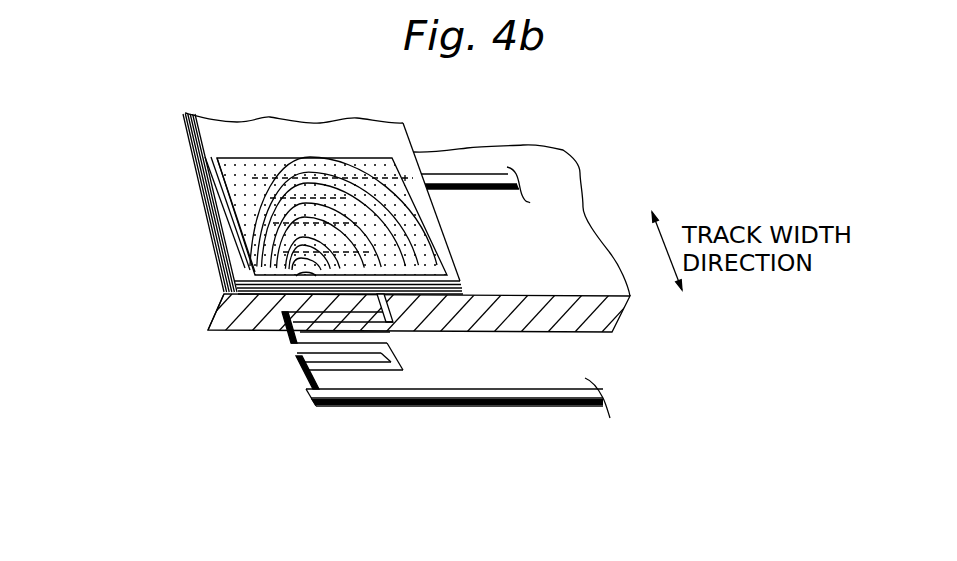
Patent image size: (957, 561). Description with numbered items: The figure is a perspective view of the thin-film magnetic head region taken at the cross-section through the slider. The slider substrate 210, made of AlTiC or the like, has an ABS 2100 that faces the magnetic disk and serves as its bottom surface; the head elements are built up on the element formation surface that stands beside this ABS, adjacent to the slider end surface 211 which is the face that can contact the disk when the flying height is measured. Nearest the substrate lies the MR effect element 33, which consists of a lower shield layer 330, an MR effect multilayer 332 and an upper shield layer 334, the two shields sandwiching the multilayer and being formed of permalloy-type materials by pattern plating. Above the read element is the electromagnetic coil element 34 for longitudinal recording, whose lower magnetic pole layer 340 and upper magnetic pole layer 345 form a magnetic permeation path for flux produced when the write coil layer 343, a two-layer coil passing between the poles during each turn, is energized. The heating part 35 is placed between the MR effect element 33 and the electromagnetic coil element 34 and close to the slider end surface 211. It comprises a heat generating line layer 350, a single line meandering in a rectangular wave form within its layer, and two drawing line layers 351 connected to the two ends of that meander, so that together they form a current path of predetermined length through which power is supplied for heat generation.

The slider end surface 211 is at (193, 160).
The electromagnetic coil element 34 is at (112, 170).
The write coil layer 343 is at (210, 197).
The upper magnetic pole layer 345 is at (218, 225).
The lower magnetic pole layer 340 is at (230, 260).
The MR effect element 33 is at (112, 263).
The upper shield layer 334 is at (240, 282).
The MR effect multilayer 332 is at (240, 288).
The lower shield layer 330 is at (240, 294).
The ABS 2100 is at (212, 318).
The slider substrate 210 is at (610, 316).
The heating part 35 is at (420, 484).
The heat generating line layer 350 is at (283, 343).
The drawing line layers 351 is at (477, 180).